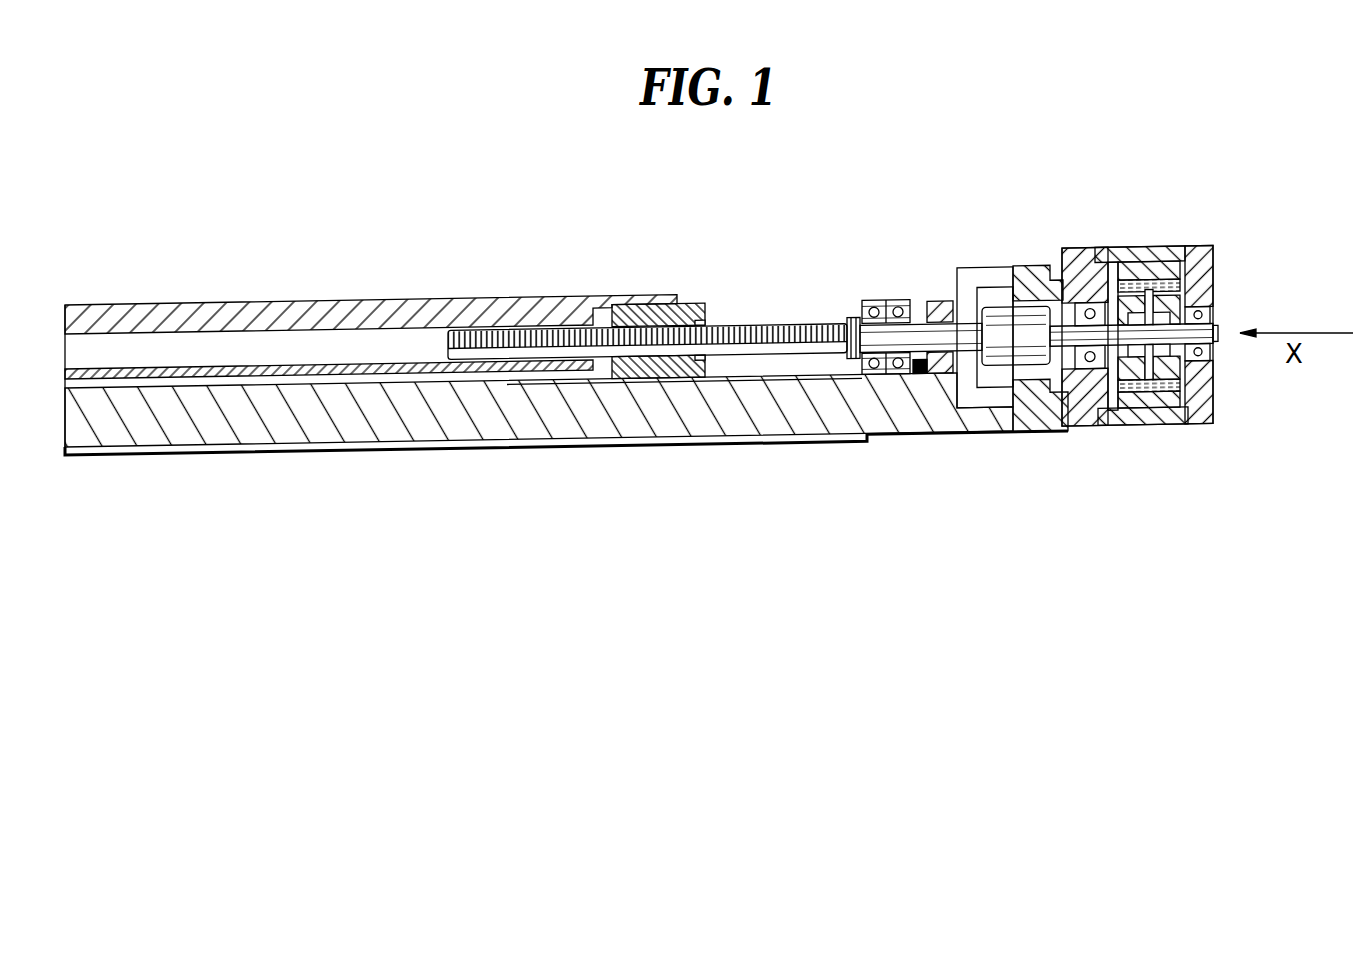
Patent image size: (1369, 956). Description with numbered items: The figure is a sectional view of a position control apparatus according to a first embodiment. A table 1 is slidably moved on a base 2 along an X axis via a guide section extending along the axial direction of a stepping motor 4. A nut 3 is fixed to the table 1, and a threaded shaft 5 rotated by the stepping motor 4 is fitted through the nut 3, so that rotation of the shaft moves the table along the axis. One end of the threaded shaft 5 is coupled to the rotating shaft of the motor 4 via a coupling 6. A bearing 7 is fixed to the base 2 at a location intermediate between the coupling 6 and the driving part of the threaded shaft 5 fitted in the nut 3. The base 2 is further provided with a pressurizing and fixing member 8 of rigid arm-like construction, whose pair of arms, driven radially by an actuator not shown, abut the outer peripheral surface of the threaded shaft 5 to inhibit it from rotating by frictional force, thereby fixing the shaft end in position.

The table 1 is at (345, 304).
The base 2 is at (369, 436).
The nut 3 is at (695, 302).
The stepping motor 4 is at (1138, 298).
The threaded shaft 5 is at (738, 330).
The coupling 6 is at (993, 314).
The bearing 7 is at (868, 305).
The pressurizing and fixing member 8 is at (977, 400).